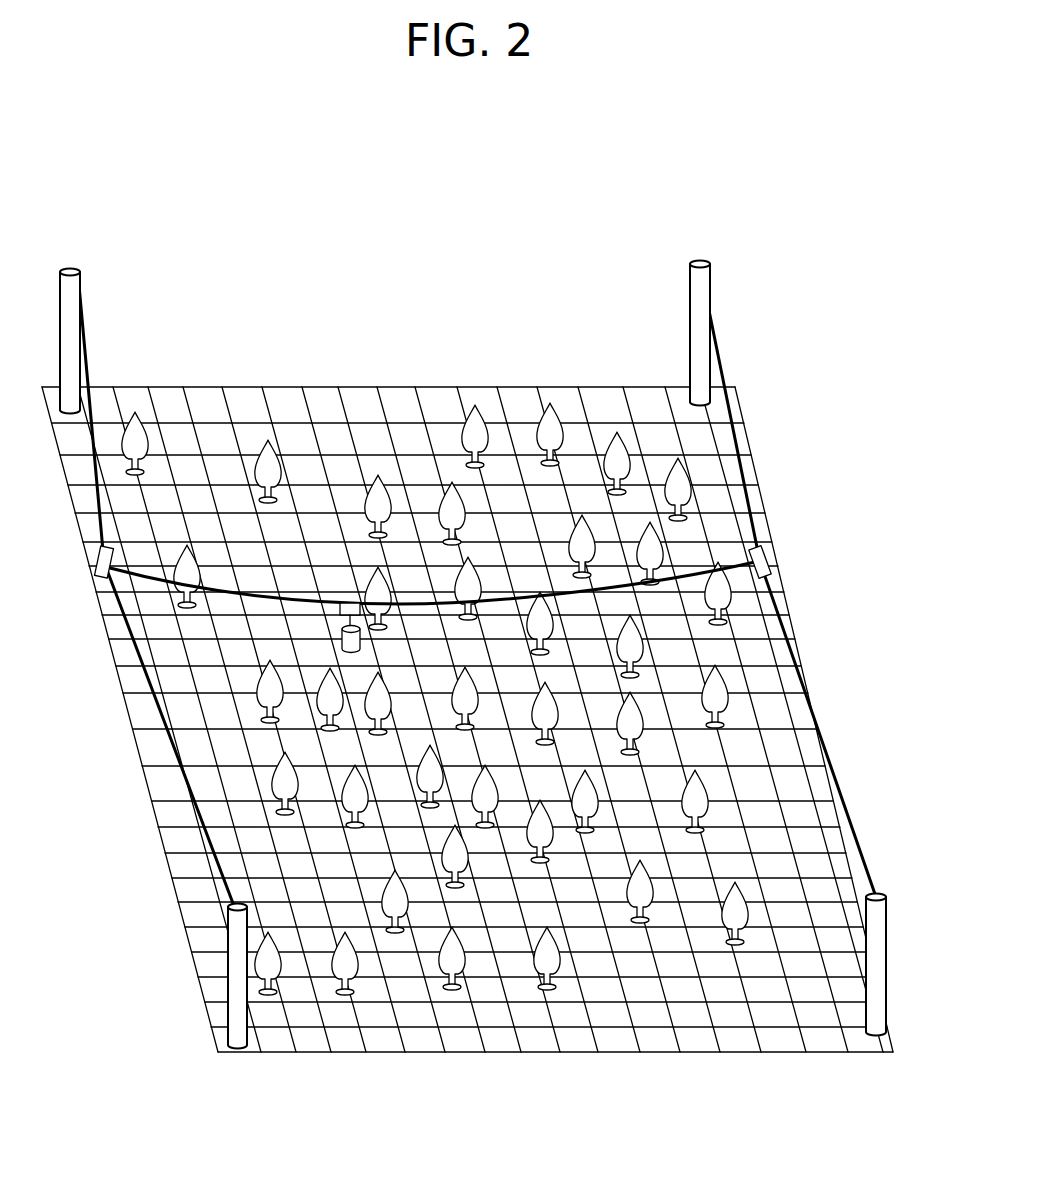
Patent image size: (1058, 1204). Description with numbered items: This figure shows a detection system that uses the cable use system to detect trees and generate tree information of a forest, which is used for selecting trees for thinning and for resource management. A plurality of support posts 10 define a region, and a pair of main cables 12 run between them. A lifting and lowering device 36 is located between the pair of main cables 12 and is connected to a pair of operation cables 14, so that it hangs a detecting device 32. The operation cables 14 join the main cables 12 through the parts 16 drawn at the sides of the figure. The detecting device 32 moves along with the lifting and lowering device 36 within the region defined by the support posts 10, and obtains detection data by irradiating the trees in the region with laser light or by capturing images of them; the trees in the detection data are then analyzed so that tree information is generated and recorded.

The support post 10 is at (82, 287).
The main cable 12 is at (88, 468).
The operation cable 14 is at (620, 578).
The connector 16 is at (96, 563).
The detecting device 32 is at (340, 640).
The lifting and lowering device 36 is at (338, 609).